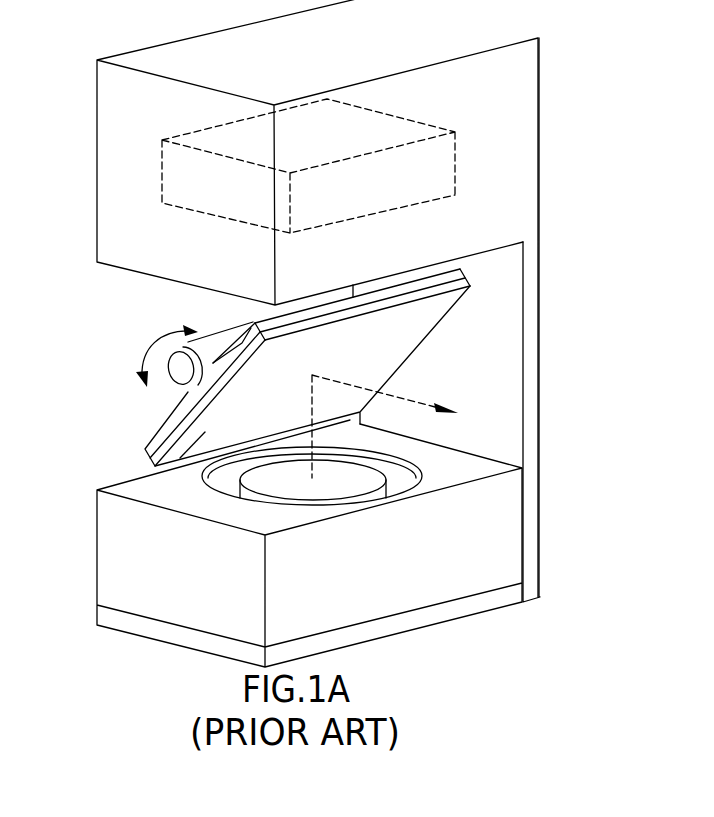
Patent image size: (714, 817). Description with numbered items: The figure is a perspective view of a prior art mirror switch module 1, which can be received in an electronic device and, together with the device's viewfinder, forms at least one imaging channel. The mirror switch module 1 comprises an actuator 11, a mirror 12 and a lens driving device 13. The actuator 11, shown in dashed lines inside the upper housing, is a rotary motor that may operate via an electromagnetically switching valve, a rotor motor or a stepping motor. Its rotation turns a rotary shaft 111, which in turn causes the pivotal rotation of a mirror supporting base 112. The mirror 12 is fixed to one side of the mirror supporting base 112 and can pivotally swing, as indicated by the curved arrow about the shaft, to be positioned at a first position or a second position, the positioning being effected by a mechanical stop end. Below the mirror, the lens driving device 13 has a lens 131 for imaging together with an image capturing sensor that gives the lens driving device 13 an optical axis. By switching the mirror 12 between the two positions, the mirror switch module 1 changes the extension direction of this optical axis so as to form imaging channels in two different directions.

The mirror switch module 1 is at (620, 250).
The actuator 11 is at (455, 160).
The rotary shaft 111 is at (178, 370).
The mirror supporting base 112 is at (152, 442).
The mirror 12 is at (155, 470).
The lens driving device 13 is at (515, 528).
The lens 131 is at (278, 483).